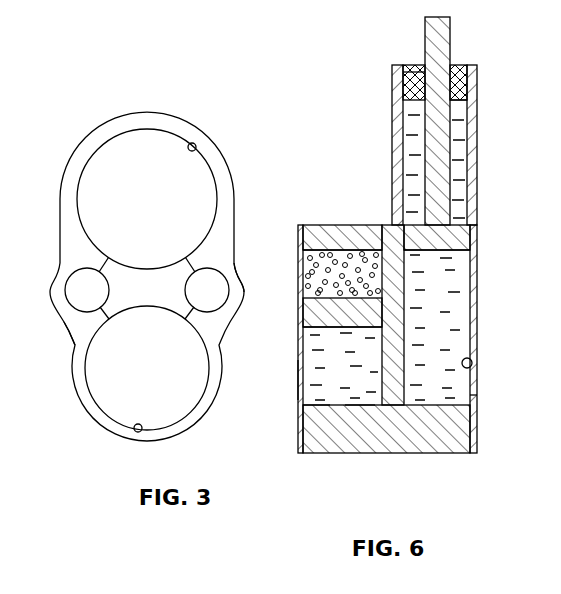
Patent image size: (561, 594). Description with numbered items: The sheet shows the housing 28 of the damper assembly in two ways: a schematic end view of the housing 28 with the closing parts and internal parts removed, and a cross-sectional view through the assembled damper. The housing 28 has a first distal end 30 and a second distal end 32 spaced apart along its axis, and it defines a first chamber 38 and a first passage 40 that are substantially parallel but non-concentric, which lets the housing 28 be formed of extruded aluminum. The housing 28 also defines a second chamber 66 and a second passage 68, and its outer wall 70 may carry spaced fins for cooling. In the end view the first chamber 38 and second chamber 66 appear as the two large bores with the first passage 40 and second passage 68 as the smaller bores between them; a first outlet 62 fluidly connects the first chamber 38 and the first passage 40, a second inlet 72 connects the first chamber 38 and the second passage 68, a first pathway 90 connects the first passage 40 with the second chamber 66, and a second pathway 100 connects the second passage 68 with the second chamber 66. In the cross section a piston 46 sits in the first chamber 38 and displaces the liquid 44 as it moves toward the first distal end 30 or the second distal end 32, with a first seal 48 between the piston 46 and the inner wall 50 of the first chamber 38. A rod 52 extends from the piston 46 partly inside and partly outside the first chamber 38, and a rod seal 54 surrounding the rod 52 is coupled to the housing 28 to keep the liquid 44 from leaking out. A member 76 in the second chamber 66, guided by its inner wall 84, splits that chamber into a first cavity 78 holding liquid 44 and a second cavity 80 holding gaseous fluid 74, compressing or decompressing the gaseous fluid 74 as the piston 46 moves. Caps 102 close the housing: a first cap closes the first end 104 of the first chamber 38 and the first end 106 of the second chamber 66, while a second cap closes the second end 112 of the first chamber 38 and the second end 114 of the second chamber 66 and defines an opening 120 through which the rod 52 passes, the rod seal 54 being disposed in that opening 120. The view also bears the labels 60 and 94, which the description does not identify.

In FIG. 3, the housing 28 is at (187, 116).
In FIG. 6, the housing 28 is at (390, 228).
In FIG. 6, the first distal end 30 is at (477, 452).
In FIG. 3, the second distal end 32 is at (240, 272).
In FIG. 6, the second distal end 32 is at (478, 65).
In FIG. 3, the first chamber 38 is at (189, 379).
In FIG. 6, the first chamber 38 is at (463, 186).
In FIG. 3, the first passage 40 is at (212, 288).
In FIG. 6, the liquid 44 is at (471, 290).
In FIG. 6, the piston 46 is at (478, 224).
In FIG. 6, the first seal 48 is at (470, 243).
In FIG. 3, the inner wall 50 is at (140, 432).
In FIG. 6, the inner wall 50 is at (472, 362).
In FIG. 6, the rod 52 is at (452, 30).
In FIG. 6, the rod seal 54 is at (410, 85).
In FIG. 6, the chamber 60 is at (453, 248).
In FIG. 3, the first outlet 62 is at (206, 318).
In FIG. 3, the second chamber 66 is at (117, 150).
In FIG. 6, the second chamber 66 is at (352, 406).
In FIG. 3, the second passage 68 is at (81, 298).
In FIG. 3, the outer wall 70 is at (73, 390).
In FIG. 6, the outer wall 70 is at (297, 380).
In FIG. 3, the second inlet 72 is at (99, 318).
In FIG. 6, the gaseous fluid 74 is at (326, 232).
In FIG. 6, the member 76 is at (362, 315).
In FIG. 6, the first cavity 78 is at (368, 406).
In FIG. 6, the second cavity 80 is at (306, 230).
In FIG. 3, the inner wall 84 is at (196, 147).
In FIG. 6, the inner wall 84 is at (374, 352).
In FIG. 3, the first pathway 90 is at (207, 262).
In FIG. 6, the annular gap 94 is at (470, 215).
In FIG. 3, the second pathway 100 is at (86, 262).
In FIG. 6, the caps 102 is at (410, 75).
In FIG. 6, the first end of the first chamber 104 is at (472, 403).
In FIG. 6, the first end of the second chamber 106 is at (318, 411).
In FIG. 6, the second end of the first chamber 112 is at (461, 103).
In FIG. 6, the second end of the second chamber 114 is at (368, 259).
In FIG. 6, the opening 120 is at (461, 80).